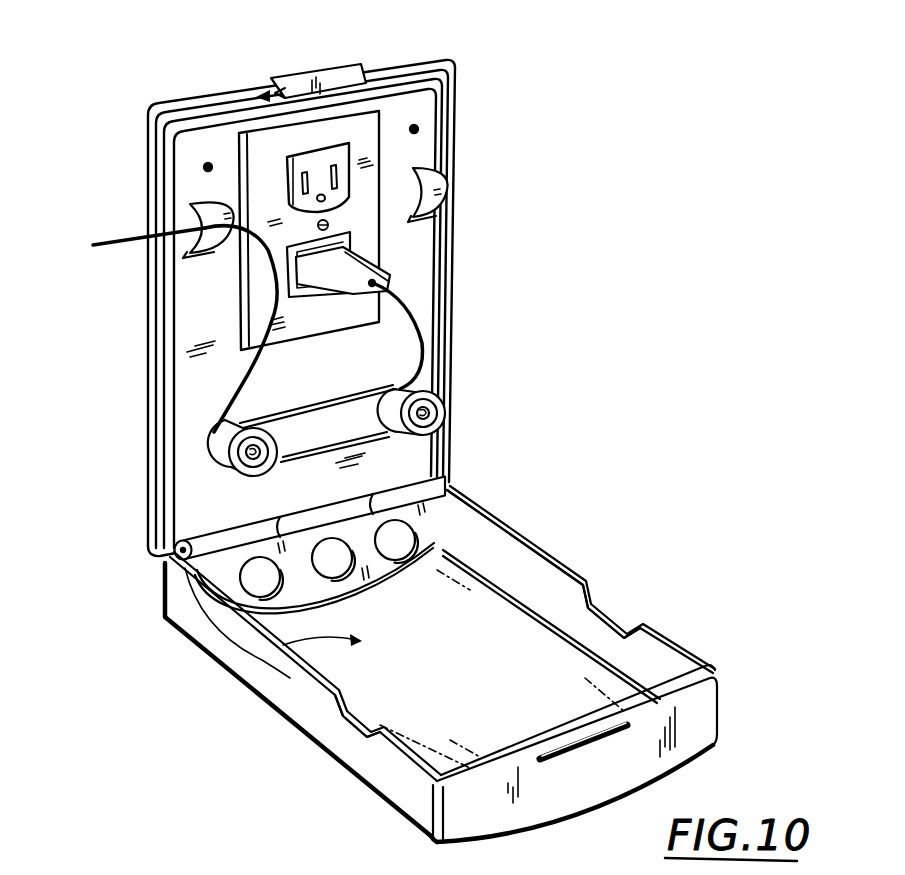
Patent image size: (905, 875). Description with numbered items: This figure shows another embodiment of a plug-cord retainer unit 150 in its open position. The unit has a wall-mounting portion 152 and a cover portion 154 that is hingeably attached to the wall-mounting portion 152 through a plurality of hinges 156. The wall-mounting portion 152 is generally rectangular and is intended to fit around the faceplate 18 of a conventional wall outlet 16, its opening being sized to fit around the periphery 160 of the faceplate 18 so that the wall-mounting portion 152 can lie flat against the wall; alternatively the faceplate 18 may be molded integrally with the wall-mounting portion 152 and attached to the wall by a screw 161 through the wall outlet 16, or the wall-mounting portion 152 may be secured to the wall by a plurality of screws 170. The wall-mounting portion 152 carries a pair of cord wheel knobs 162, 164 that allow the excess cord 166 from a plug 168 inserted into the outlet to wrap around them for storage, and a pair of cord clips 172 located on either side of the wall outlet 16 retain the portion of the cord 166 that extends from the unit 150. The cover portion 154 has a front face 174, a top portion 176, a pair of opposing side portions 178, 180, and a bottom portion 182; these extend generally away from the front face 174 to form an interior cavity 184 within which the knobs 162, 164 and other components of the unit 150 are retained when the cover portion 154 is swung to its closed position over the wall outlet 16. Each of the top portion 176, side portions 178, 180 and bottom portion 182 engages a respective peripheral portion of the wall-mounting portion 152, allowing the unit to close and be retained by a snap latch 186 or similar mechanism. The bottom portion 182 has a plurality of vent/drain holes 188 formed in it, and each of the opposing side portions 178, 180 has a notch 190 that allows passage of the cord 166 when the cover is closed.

The wall outlet 16 is at (292, 143).
The faceplate 18 is at (359, 131).
The plug-cord retainer unit 150 is at (552, 146).
The wall-mounting portion 152 is at (427, 320).
The cover portion 154 is at (523, 644).
The hinges 156 is at (447, 492).
The periphery of the faceplate 160 is at (380, 160).
The screw 161 is at (328, 224).
The cord wheel knob 162 is at (230, 472).
The cord wheel knob 164 is at (440, 420).
The cord 166 is at (133, 242).
The plug 168 is at (376, 284).
The screws 170 is at (208, 163).
The cord clips 172 is at (198, 205).
The front face 174 is at (453, 697).
The top portion 176 is at (487, 803).
The side portion 178 is at (384, 772).
The side portion 180 is at (667, 670).
The bottom portion 182 is at (432, 505).
The interior cavity 184 is at (232, 692).
The snap latch 186 is at (340, 66).
The vent/drain holes 188 is at (437, 550).
The notch 190 is at (616, 623).